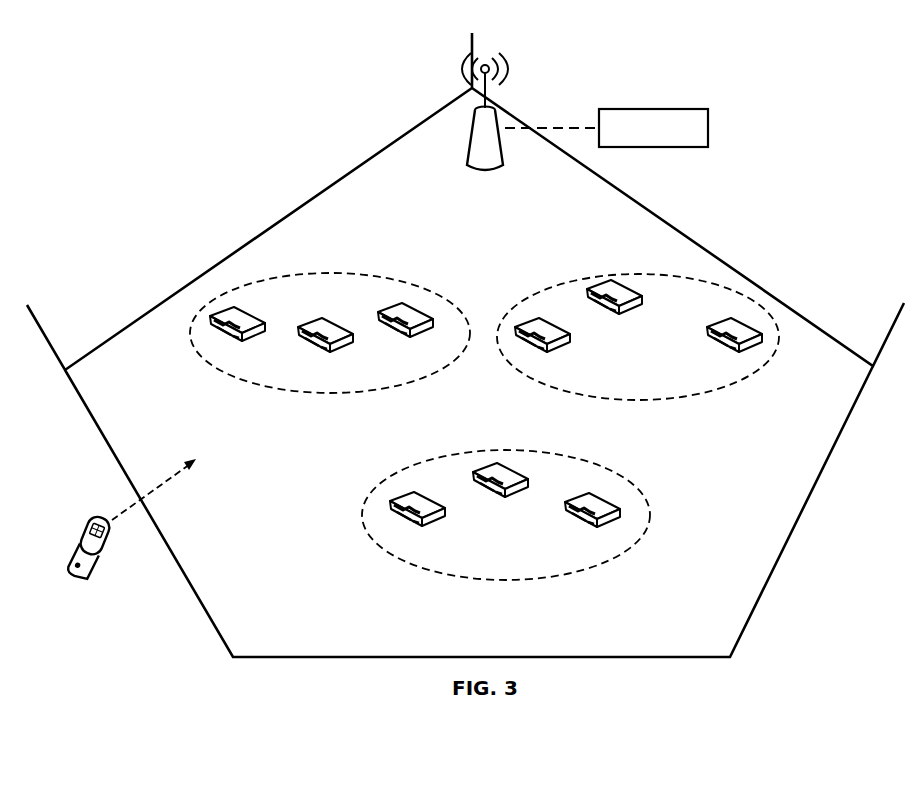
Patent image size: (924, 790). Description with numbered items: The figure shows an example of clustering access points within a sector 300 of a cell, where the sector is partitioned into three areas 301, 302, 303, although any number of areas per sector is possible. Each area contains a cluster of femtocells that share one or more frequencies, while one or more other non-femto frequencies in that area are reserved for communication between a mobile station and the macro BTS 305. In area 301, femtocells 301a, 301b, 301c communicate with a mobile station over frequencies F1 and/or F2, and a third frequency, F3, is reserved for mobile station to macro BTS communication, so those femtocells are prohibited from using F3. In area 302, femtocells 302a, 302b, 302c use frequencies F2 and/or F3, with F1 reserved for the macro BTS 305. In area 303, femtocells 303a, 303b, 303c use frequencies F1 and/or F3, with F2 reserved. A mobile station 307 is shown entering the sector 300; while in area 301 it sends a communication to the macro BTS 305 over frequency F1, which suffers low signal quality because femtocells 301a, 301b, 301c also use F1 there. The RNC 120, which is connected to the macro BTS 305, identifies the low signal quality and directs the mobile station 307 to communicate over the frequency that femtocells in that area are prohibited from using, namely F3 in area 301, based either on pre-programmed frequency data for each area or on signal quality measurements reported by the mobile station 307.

The sector 300 is at (497, 223).
The area 301 is at (290, 306).
The femtocell 301a is at (212, 322).
The femtocell 301b is at (318, 318).
The femtocell 301c is at (418, 312).
The area 302 is at (654, 375).
The femtocell 302a is at (620, 283).
The femtocell 302b is at (515, 340).
The femtocell 302c is at (759, 346).
The area 303 is at (514, 555).
The femtocell 303a is at (393, 506).
The femtocell 303b is at (511, 471).
The femtocell 303c is at (620, 512).
The macro BTS 305 is at (501, 135).
The mobile station 307 is at (97, 572).
The RNC 120 is at (606, 128).